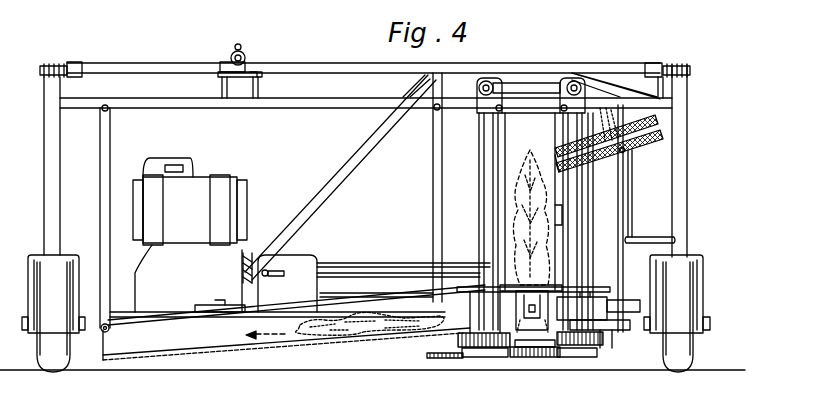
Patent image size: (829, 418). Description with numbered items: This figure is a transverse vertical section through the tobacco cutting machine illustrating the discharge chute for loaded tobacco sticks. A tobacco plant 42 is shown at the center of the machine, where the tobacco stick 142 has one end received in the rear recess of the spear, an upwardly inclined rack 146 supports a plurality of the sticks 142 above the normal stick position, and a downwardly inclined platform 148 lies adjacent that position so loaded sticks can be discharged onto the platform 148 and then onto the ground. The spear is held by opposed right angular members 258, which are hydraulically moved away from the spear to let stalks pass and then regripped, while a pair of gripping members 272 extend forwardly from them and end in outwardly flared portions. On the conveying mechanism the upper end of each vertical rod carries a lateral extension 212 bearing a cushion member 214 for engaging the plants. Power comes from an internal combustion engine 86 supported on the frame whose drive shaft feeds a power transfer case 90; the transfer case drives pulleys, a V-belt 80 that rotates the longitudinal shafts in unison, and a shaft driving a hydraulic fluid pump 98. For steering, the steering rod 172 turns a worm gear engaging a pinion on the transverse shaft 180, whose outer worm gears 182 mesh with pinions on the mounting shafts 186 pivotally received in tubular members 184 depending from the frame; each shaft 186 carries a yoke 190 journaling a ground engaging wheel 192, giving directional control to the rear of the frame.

The tobacco plants 42 is at (515, 177).
The V-belt 80 is at (520, 82).
The internal combustion engine 86 is at (238, 254).
The power transfer case 90 is at (316, 258).
The hydraulic fluid pump 98 is at (284, 276).
The tobacco stick 142 is at (597, 127).
The upwardly inclined rack 146 is at (651, 140).
The downwardly inclined platform 148 is at (256, 350).
The steering rod 172 is at (236, 50).
The transverse shaft 180 is at (352, 72).
The worm gears 182 is at (57, 64).
The tubular members 184 is at (690, 236).
The mounting shaft 186 is at (690, 257).
The yoke 190 is at (703, 290).
The ground engaging wheel 192 is at (53, 366).
The lateral extension 212 is at (533, 290).
The cushion member 214 is at (527, 342).
The right angular members 258 is at (527, 330).
The gripping members 272 is at (542, 346).